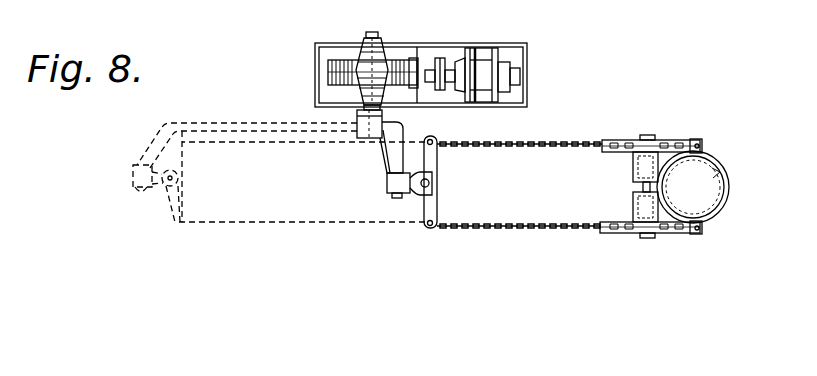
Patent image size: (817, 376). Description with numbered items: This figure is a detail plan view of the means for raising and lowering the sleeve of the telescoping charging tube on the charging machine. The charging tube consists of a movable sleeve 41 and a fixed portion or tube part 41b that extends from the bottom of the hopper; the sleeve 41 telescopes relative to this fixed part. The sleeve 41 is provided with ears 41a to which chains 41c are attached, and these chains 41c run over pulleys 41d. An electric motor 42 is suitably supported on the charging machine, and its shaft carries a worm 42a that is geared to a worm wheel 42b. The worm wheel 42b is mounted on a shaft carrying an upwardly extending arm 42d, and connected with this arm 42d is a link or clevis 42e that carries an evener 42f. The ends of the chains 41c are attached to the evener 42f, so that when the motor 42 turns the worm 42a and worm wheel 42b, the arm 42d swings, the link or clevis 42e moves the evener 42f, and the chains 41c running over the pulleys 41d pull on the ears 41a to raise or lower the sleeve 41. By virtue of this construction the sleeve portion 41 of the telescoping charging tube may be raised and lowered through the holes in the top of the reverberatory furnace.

The movable sleeve 41 is at (728, 195).
The ears 41a is at (700, 147).
The fixed portion or tube part 41b is at (727, 170).
The chains 41c is at (573, 141).
The pulleys 41d is at (615, 143).
The electric motor 42 is at (489, 52).
The worm 42a is at (362, 62).
The worm wheel 42b is at (327, 73).
The upwardly extending arm 42d is at (194, 125).
The link or clevis 42e is at (152, 190).
The evener 42f is at (180, 207).